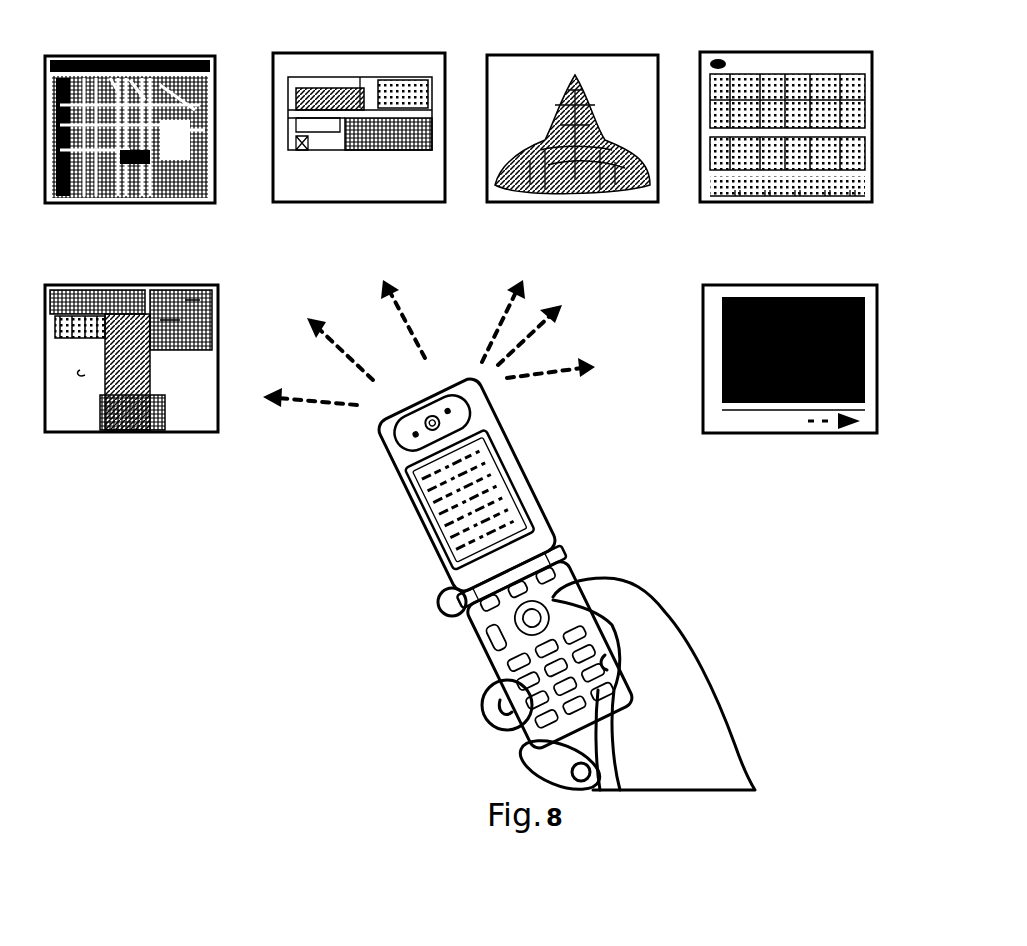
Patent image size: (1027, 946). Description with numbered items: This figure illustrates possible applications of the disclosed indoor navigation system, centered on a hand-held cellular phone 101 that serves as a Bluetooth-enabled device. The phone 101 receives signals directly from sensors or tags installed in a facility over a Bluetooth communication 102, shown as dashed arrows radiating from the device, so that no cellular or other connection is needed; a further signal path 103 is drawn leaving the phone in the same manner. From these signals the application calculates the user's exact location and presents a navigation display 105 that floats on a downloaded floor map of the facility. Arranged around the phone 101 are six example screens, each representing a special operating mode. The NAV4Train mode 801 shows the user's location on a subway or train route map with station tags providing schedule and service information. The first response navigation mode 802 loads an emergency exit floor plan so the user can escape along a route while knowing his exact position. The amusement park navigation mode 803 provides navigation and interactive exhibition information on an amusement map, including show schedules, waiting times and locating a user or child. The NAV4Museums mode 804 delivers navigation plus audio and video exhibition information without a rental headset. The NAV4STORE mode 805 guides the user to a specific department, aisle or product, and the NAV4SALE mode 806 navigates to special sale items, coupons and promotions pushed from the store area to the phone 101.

The cellular phone 101 is at (530, 498).
The Bluetooth communication 102 is at (531, 345).
The transmitted signal / antenna 103 is at (383, 412).
The navigation display 105 is at (486, 497).
The NAV4Train mode 801 is at (130, 126).
The first response navigation mode 802 is at (359, 126).
The amusement park navigation mode 803 is at (572, 126).
The NAV4Museums mode 804 is at (786, 125).
The NAV4STORE mode 805 is at (135, 356).
The NAV4SALE mode 806 is at (790, 356).